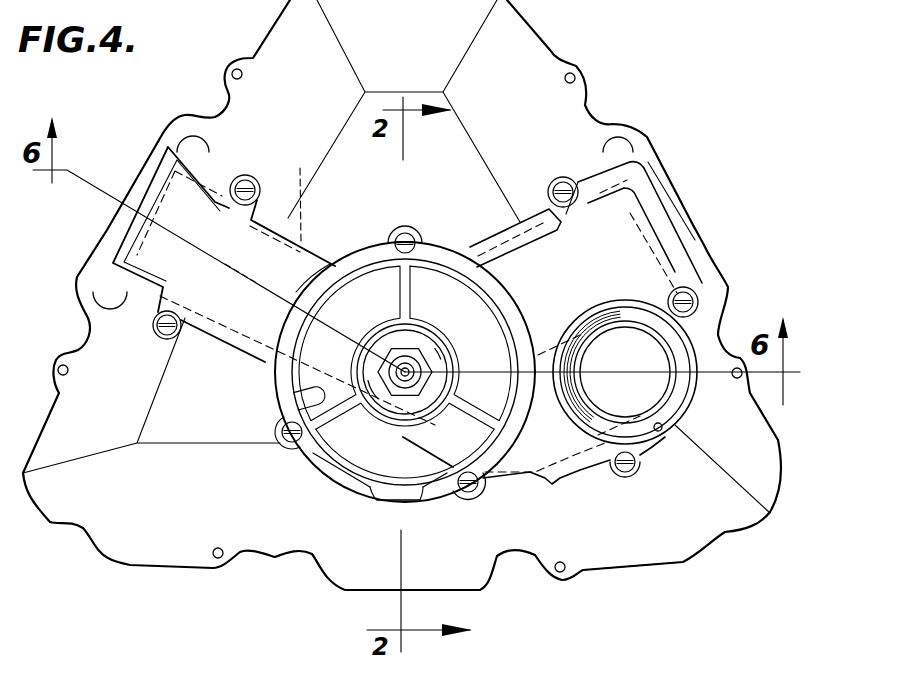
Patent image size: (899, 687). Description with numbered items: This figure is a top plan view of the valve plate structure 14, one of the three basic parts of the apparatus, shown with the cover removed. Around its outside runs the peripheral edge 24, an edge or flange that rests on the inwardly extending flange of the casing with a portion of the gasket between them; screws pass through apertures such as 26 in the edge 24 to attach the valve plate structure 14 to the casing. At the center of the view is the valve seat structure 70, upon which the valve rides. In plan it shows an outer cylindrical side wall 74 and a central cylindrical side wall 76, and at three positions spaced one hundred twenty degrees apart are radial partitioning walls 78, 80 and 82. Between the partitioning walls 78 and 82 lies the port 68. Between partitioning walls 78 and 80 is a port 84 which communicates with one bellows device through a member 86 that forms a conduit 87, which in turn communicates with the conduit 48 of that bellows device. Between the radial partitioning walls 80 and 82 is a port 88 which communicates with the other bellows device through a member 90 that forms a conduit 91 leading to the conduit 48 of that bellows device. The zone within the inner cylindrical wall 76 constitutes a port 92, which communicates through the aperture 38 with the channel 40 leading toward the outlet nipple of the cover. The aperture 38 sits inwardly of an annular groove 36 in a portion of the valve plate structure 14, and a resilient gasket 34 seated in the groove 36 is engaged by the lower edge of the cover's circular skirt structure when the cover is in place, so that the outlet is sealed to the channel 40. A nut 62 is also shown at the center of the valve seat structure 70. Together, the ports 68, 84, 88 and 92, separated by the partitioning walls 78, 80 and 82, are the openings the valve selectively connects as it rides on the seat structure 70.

The valve plate structure 14 is at (303, 37).
The peripheral edge 24 is at (682, 563).
The apertures 26 is at (227, 559).
The resilient gasket 34 is at (678, 398).
The annular groove 36 is at (658, 432).
The aperture 38 is at (617, 329).
The channel 40 is at (540, 495).
The conduit 48 is at (113, 237).
The shaft nut 62 is at (405, 384).
The port 68 is at (377, 490).
The valve seat structure 70 is at (317, 460).
The cylindrical side wall 74 is at (418, 490).
The central cylindrical side wall 76 is at (332, 460).
The radial partitioning wall 78 is at (297, 396).
The radial partitioning wall 80 is at (368, 248).
The radial partitioning wall 82 is at (498, 480).
The port 84 is at (358, 257).
The member 86 is at (258, 257).
The conduit 87 is at (298, 194).
The port 88 is at (444, 268).
The member 90 is at (518, 223).
The conduit 91 is at (593, 181).
The port 92 is at (320, 300).